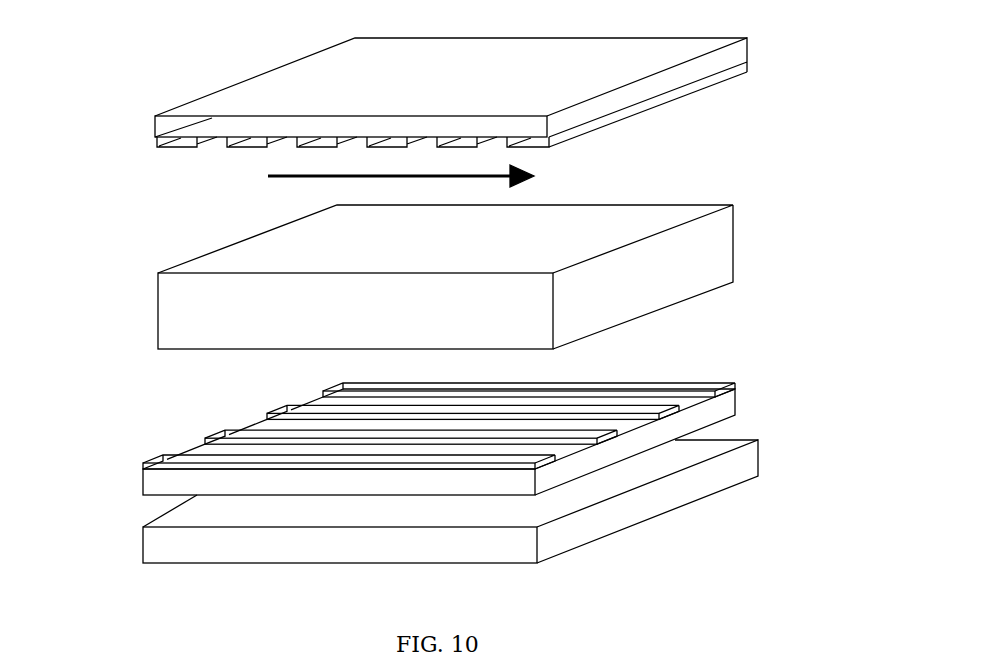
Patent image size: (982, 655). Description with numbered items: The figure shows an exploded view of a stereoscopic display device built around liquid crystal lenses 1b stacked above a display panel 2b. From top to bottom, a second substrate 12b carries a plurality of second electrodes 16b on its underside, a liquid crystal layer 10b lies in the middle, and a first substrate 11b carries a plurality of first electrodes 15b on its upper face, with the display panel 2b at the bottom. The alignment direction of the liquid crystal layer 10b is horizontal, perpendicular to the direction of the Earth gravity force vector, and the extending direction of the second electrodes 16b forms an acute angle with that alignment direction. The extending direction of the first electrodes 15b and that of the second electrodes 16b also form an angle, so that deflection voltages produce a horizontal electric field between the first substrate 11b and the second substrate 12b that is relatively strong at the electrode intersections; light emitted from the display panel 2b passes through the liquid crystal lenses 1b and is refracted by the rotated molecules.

The liquid crystal lenses 1b is at (415, 101).
The second substrate 12b is at (608, 72).
The second electrodes 16b is at (157, 143).
The liquid crystal layer 10b is at (183, 292).
The first substrate 11b is at (409, 435).
The first electrodes 15b is at (218, 433).
The display panel 2b is at (665, 503).